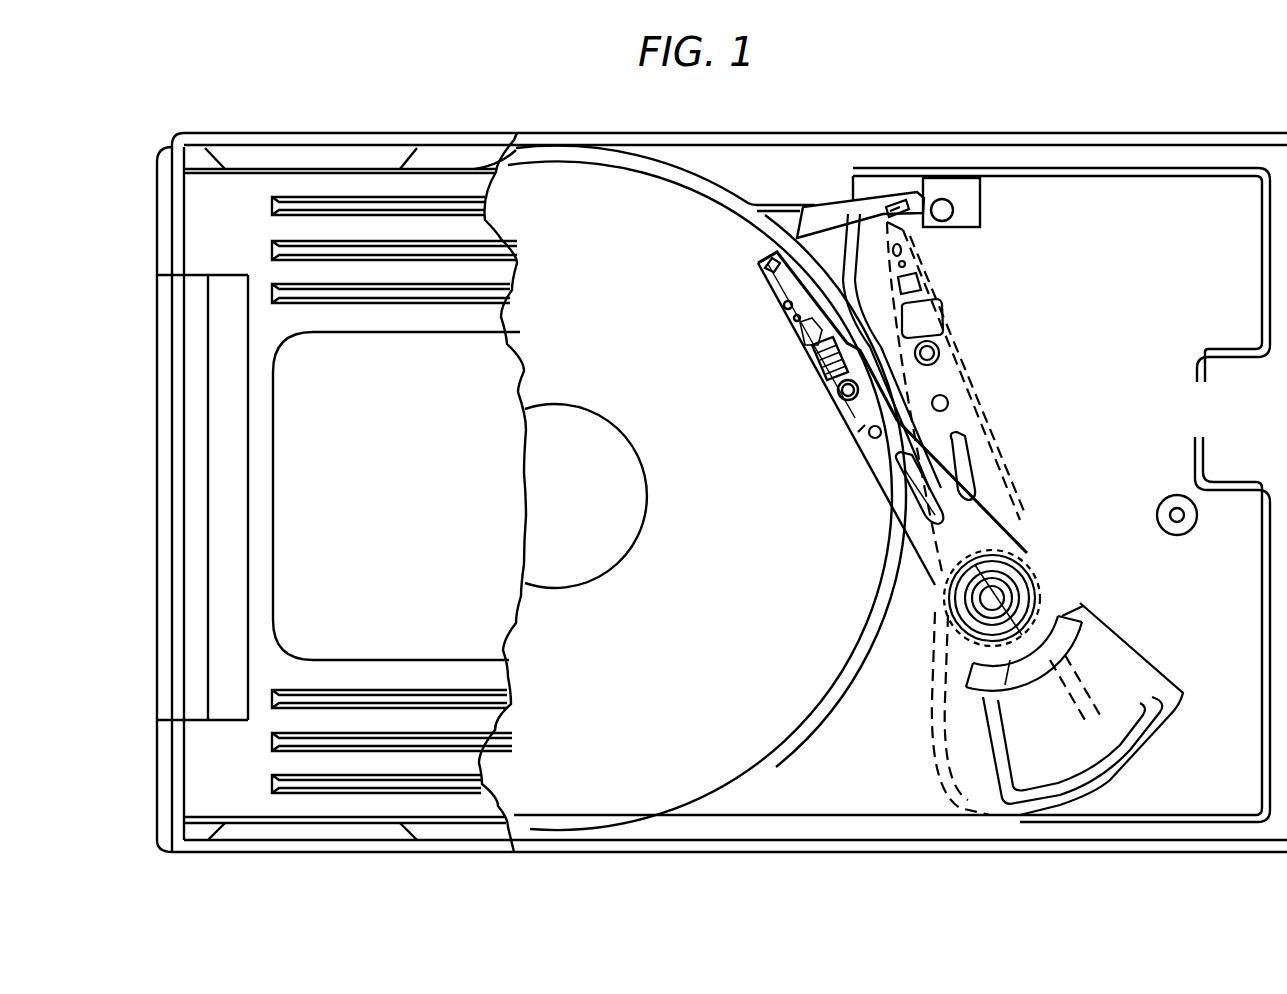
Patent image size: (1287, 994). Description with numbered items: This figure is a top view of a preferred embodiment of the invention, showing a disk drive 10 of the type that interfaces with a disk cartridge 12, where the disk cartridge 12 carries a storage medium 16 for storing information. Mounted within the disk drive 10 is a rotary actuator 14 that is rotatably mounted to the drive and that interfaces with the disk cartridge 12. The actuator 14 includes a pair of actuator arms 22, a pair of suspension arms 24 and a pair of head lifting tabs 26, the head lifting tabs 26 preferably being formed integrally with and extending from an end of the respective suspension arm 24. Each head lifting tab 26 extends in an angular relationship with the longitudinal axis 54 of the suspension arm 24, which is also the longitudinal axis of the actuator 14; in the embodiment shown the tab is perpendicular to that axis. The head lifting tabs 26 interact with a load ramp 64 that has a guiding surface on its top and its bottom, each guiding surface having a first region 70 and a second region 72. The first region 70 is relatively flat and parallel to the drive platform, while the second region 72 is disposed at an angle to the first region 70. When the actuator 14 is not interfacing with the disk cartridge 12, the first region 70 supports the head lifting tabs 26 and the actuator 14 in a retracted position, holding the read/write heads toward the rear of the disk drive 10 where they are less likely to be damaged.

The disk drive 10 is at (1103, 112).
The disk cartridge 12 is at (242, 200).
The actuator 14 is at (997, 436).
The storage medium 16 is at (604, 223).
The actuator arms 22 is at (898, 520).
The suspension arms 24 is at (811, 377).
The head lifting tabs 26 is at (767, 262).
The longitudinal axis 54 is at (853, 428).
The load ramp 64 is at (822, 208).
The first region 70 is at (872, 200).
The second region 72 is at (779, 250).